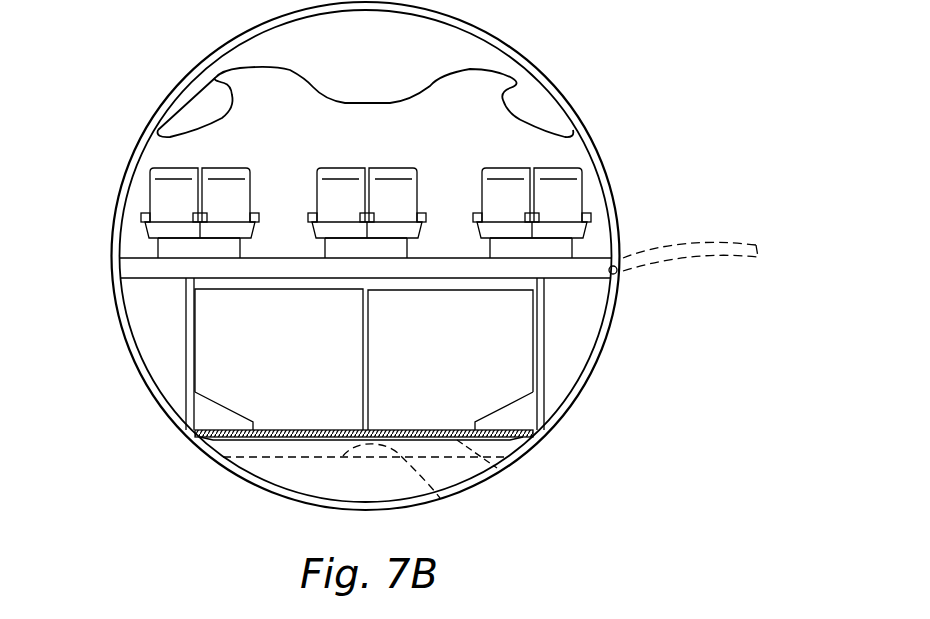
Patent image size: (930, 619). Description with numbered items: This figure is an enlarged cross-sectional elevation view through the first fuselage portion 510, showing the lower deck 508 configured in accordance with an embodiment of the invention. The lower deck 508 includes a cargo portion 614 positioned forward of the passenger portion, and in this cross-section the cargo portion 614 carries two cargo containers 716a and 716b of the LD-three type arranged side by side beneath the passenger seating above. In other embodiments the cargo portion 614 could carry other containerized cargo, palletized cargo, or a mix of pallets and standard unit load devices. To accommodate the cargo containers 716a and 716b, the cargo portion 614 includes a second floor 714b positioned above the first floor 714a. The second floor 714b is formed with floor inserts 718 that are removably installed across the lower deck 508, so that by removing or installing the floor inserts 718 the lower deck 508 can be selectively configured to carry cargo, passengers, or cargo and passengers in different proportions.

The first fuselage portion 510 is at (500, 40).
The lower deck 508 is at (292, 285).
The cargo portion 614 is at (431, 289).
The LD-3 cargo container 716a is at (233, 355).
The LD-3 cargo container 716b is at (507, 340).
The second floor 714b is at (512, 432).
The floor inserts 718 is at (498, 469).
The first floor 714a is at (441, 499).